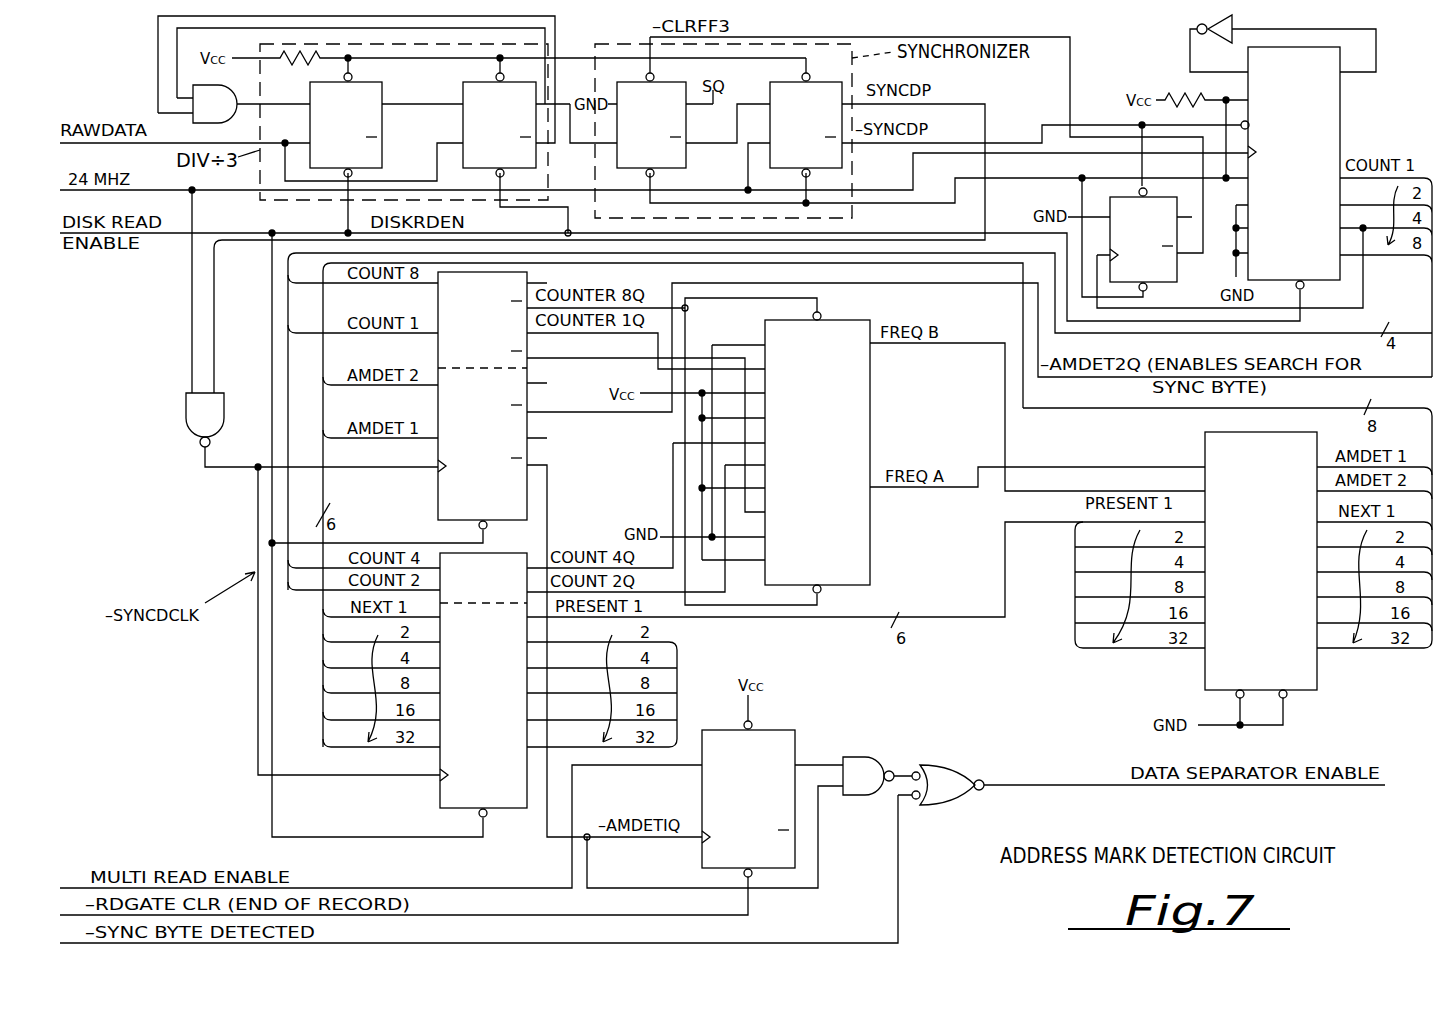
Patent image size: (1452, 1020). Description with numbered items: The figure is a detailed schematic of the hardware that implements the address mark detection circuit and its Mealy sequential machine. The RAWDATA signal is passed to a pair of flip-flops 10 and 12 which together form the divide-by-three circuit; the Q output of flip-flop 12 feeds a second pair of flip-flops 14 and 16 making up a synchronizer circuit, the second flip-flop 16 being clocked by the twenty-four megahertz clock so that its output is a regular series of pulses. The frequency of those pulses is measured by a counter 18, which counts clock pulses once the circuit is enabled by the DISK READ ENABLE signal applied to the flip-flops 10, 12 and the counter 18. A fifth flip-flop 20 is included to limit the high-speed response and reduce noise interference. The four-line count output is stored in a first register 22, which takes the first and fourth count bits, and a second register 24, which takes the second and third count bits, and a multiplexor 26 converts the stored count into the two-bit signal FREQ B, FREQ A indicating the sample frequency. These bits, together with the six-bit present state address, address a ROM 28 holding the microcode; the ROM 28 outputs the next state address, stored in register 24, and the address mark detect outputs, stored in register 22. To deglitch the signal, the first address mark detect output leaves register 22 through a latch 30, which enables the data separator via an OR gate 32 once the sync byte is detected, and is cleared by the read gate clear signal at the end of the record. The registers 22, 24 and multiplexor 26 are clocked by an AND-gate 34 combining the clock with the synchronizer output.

The flip-flop 10 is at (316, 115).
The flip-flop 12 is at (470, 118).
The flip-flop 14 is at (680, 121).
The flip-flop 16 is at (777, 86).
The counter 18 is at (1316, 104).
The fifth flip-flop 20 is at (1168, 270).
The first register 22 is at (450, 490).
The second register 24 is at (450, 793).
The multiplexor 26 is at (880, 406).
The ROM 28 is at (1225, 445).
The latch 30 is at (780, 746).
The OR gate 32 is at (945, 782).
The AND-gate 34 is at (195, 410).